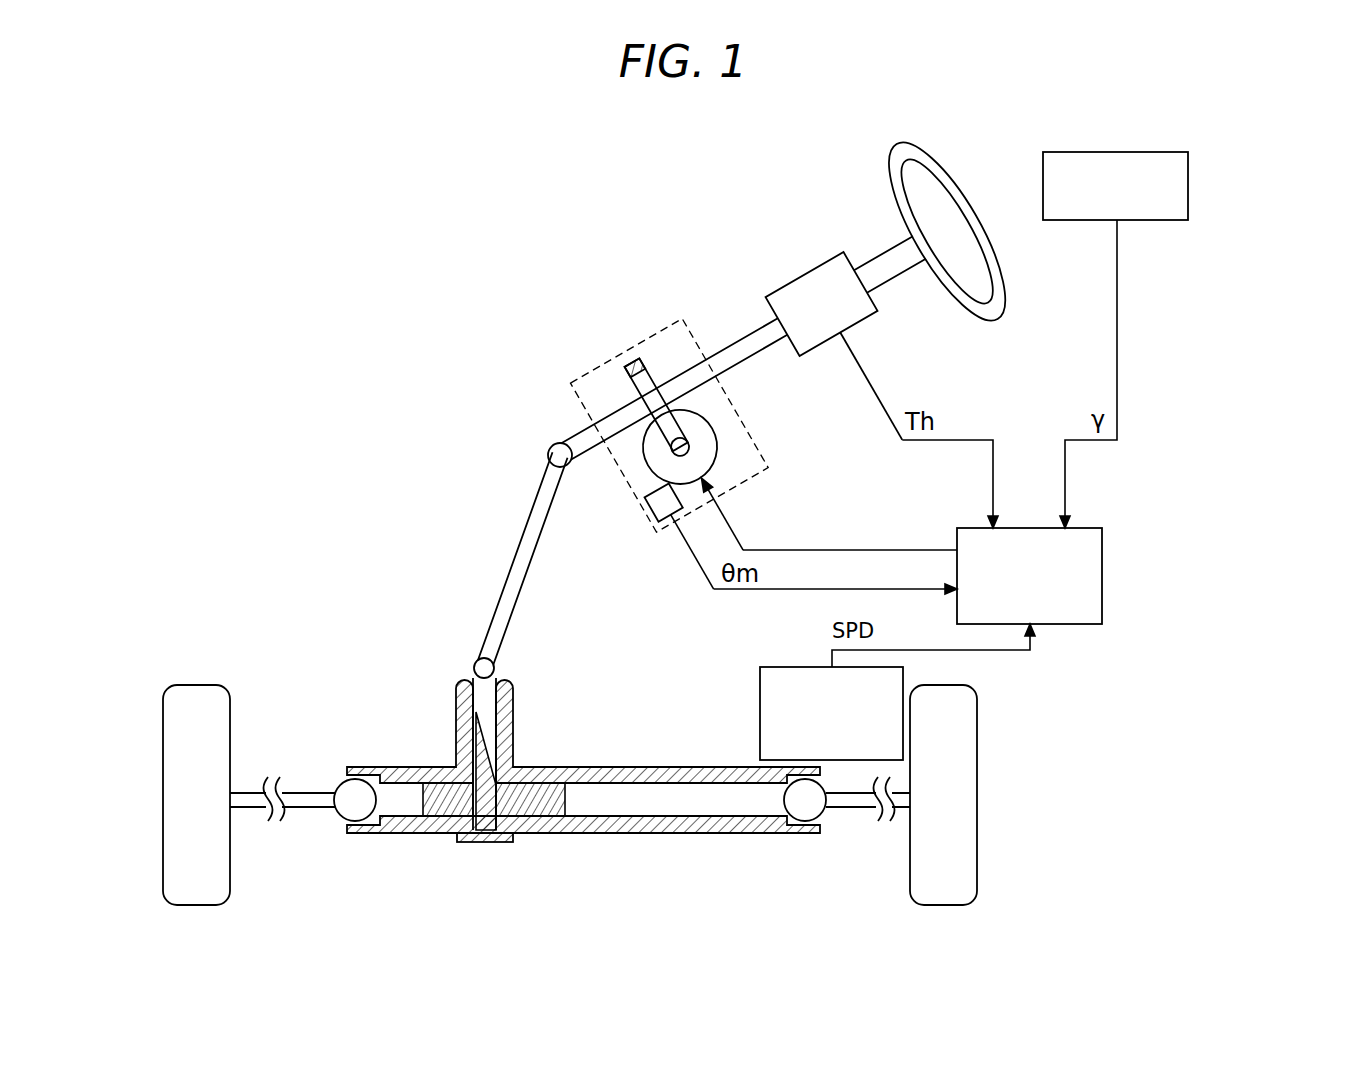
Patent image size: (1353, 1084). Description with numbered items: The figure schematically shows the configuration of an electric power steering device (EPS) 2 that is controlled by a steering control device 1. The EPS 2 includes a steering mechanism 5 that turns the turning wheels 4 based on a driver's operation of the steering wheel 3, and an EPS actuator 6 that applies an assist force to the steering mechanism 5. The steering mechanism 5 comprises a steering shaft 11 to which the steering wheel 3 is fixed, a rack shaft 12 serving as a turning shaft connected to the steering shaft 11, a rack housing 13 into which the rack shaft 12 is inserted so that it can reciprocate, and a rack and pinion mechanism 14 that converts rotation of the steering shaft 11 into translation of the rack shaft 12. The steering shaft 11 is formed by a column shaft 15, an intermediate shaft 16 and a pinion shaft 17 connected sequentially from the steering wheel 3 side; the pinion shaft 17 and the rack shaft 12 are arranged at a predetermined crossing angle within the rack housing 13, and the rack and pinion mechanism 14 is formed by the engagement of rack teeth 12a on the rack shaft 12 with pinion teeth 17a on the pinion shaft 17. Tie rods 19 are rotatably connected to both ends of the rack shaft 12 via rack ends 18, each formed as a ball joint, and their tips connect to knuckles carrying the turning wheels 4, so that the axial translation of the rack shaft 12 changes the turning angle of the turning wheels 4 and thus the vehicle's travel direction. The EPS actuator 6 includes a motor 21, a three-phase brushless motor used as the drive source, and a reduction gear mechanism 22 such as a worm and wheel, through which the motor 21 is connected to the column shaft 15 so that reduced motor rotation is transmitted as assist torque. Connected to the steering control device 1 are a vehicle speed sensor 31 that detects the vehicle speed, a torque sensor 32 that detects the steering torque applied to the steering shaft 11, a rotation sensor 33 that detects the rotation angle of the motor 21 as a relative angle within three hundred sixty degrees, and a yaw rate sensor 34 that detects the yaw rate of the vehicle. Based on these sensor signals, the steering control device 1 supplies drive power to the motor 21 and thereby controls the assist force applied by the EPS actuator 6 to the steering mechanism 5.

The steering control device 1 is at (1105, 563).
The electric power steering device (EPS) 2 is at (250, 253).
The steering wheel 3 is at (1000, 265).
The turning wheels 4 is at (197, 907).
The steering mechanism 5 is at (330, 665).
The EPS actuator 6 is at (585, 378).
The steering shaft 11 is at (483, 408).
The rack shaft 12 is at (604, 772).
The rack teeth 12a is at (437, 835).
The rack housing 13 is at (675, 767).
The rack and pinion mechanism 14 is at (512, 826).
The column shaft 15 is at (565, 436).
The intermediate shaft 16 is at (528, 543).
The pinion shaft 17 is at (453, 690).
The pinion teeth 17a is at (490, 838).
The rack ends 18 is at (342, 822).
The tie rods 19 is at (237, 812).
The motor 21 is at (707, 412).
The reduction gear mechanism 22 is at (668, 453).
The vehicle speed sensor 31 is at (780, 666).
The torque sensor 32 is at (792, 284).
The rotation sensor 33 is at (653, 513).
The yaw rate sensor 34 is at (1190, 175).